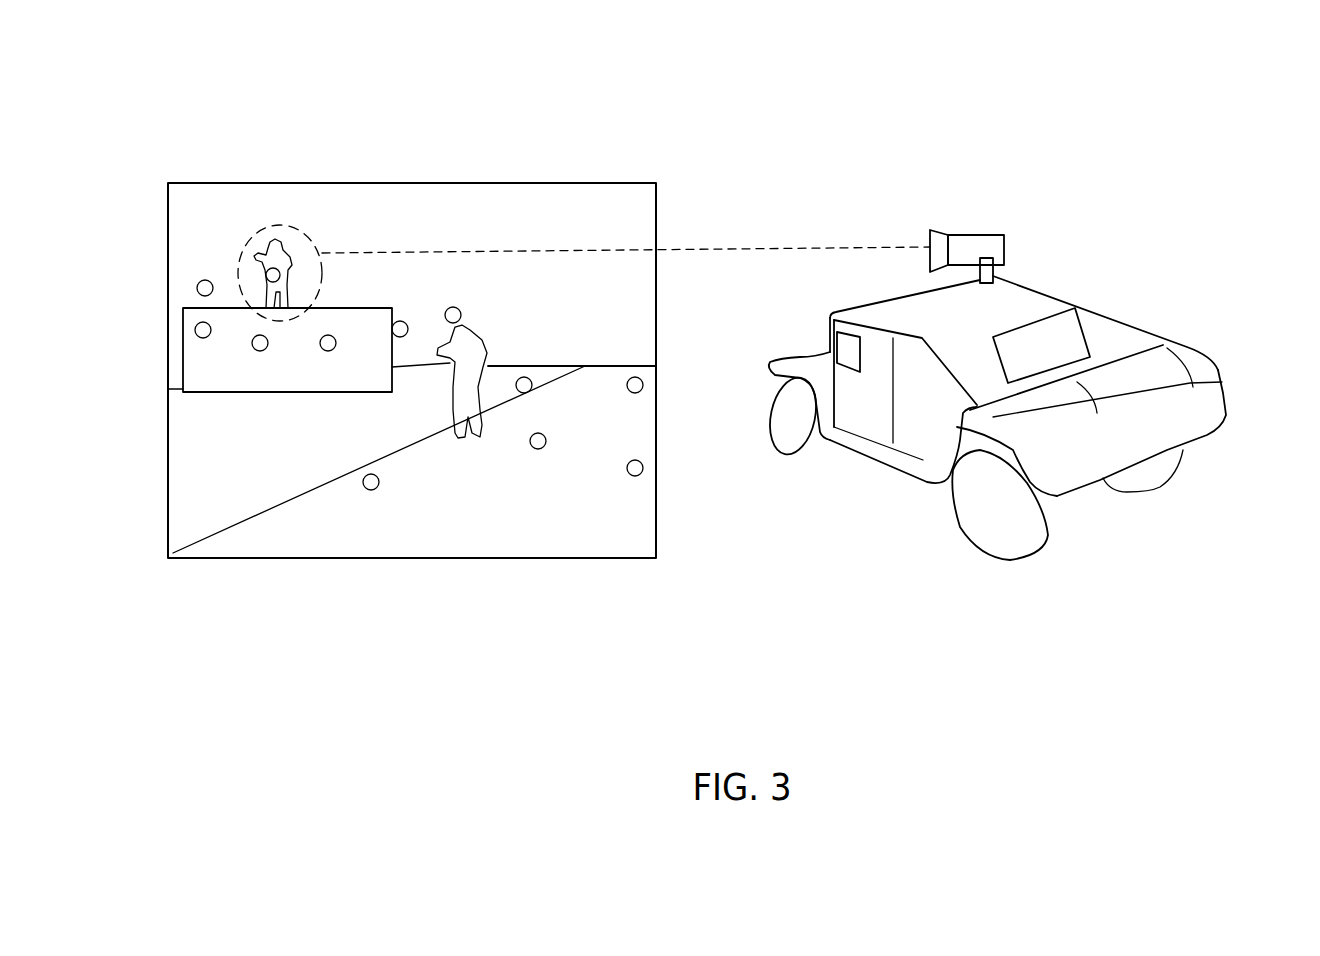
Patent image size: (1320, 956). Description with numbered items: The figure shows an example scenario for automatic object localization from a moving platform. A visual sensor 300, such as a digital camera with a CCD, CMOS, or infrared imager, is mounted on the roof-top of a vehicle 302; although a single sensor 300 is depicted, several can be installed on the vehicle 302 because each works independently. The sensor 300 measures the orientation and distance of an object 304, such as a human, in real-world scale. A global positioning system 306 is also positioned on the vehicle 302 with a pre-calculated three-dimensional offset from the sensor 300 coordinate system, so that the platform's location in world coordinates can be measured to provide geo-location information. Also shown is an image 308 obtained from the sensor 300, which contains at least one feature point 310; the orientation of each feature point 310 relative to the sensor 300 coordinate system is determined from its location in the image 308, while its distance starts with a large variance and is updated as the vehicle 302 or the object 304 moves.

The visual sensor 300 is at (993, 228).
The vehicle 302 is at (1219, 368).
The object 304 is at (270, 247).
The global positioning system 306 is at (1082, 330).
The image 308 is at (530, 183).
The feature point 310 is at (373, 490).